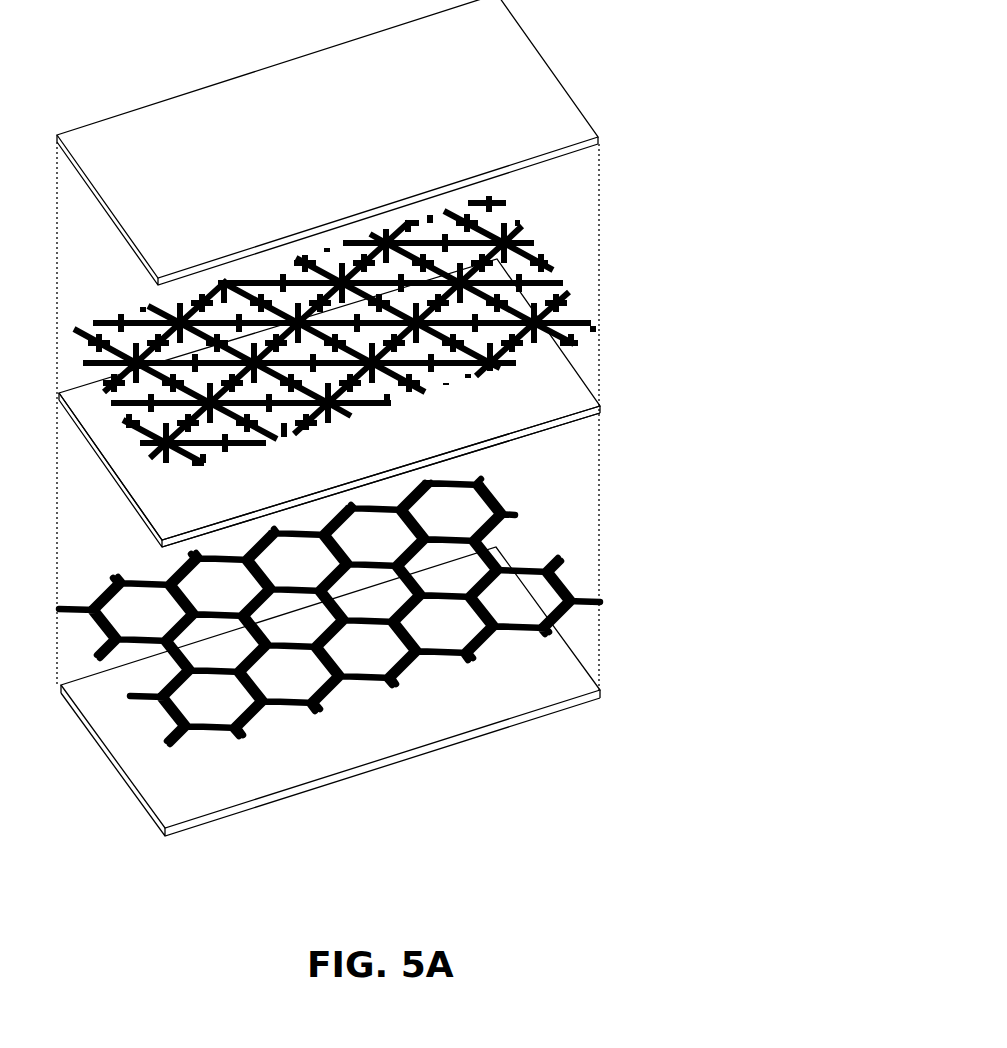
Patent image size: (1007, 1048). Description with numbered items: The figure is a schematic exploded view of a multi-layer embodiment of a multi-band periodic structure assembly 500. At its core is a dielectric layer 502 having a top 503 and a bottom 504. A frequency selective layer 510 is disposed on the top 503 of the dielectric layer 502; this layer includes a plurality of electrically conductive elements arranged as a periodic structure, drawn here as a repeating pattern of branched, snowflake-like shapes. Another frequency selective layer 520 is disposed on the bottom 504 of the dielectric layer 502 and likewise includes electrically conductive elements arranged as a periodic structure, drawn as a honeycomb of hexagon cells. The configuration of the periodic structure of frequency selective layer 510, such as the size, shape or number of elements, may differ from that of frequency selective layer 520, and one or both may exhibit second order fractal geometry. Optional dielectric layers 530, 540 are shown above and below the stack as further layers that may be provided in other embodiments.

The periodic structure assembly 500 is at (432, 810).
The dielectric layer 502 is at (590, 403).
The top 503 is at (167, 518).
The bottom 504 is at (540, 438).
The frequency selective layer 510 is at (540, 277).
The frequency selective layer 520 is at (563, 587).
The dielectric layer 530 is at (538, 80).
The dielectric layer 540 is at (580, 682).